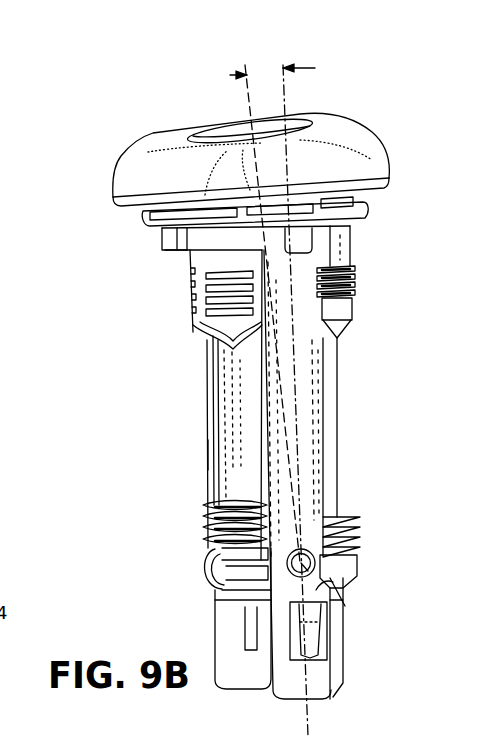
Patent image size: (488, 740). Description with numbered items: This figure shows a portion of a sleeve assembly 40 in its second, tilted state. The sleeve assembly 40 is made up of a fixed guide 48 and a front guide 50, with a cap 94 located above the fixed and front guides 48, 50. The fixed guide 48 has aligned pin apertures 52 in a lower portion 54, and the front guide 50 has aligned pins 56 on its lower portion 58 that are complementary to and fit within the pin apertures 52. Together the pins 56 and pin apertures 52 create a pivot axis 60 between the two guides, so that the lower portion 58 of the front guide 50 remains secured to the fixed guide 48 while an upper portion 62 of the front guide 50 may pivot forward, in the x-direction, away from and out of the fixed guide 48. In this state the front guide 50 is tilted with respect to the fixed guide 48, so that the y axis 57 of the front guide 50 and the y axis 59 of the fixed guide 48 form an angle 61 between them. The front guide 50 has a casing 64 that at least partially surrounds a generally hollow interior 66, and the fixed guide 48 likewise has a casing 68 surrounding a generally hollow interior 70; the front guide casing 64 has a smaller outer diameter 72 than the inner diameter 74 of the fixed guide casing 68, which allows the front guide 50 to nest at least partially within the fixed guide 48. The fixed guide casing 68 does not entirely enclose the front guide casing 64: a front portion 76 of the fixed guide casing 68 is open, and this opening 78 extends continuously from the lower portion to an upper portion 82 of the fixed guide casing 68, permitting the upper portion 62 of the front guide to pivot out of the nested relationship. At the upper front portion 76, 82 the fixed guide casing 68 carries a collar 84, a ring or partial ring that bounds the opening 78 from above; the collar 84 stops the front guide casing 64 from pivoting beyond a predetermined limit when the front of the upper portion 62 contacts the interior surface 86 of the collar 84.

The sleeve assembly 40 is at (92, 216).
The fixed guide 48 is at (352, 240).
The front guide 50 is at (205, 452).
The pin apertures 52 is at (314, 572).
The lower portion 54 is at (378, 615).
The pins 56 is at (326, 548).
The y axis 57 is at (246, 108).
The lower portion 58 is at (182, 618).
The y axis 59 is at (284, 92).
The pivot axis 60 is at (345, 612).
The angle 61 is at (272, 64).
The upper portion 62 is at (180, 287).
The casing 64 is at (208, 380).
The hollow interior 66 is at (245, 425).
The casing 68 is at (331, 438).
The hollow interior 70 is at (295, 405).
The outer diameter 72 is at (226, 490).
The inner diameter 74 is at (214, 521).
The front portion 76 is at (272, 366).
The opening 78 is at (195, 345).
The upper portion 82 is at (320, 314).
The collar 84 is at (160, 236).
The interior surface 86 is at (165, 248).
The cap 94 is at (346, 132).